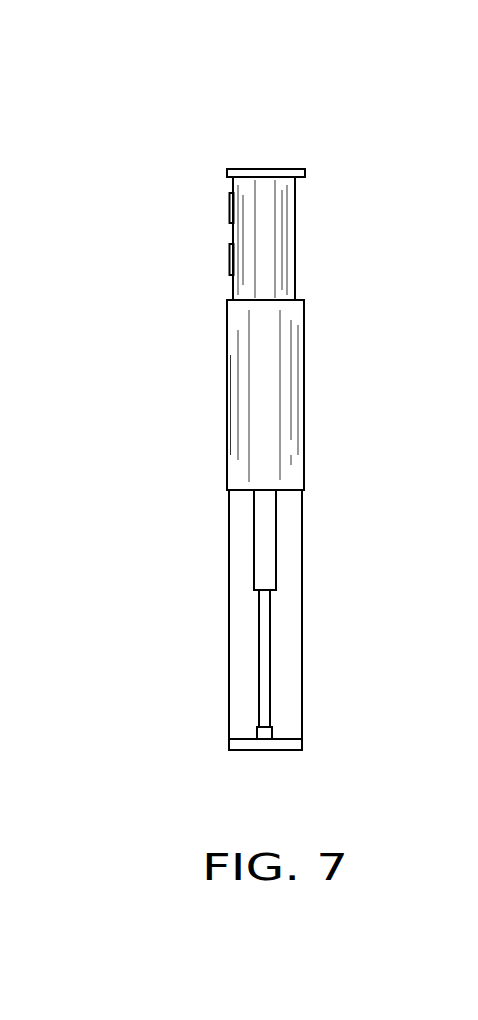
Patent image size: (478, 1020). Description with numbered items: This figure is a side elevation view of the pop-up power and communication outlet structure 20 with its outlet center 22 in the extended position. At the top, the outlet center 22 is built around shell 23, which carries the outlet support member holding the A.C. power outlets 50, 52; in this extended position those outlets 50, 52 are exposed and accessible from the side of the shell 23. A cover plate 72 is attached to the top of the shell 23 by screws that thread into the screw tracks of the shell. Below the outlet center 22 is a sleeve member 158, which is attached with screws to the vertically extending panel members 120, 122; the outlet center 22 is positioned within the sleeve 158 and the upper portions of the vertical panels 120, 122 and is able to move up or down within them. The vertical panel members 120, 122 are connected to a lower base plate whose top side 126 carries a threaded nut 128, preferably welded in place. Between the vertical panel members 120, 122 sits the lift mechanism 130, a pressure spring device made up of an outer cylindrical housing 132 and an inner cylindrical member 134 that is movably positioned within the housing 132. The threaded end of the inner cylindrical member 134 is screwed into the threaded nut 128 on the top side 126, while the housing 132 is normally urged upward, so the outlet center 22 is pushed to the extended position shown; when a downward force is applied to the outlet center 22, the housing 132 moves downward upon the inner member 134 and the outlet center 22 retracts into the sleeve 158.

The power and communication outlet structure 20 is at (185, 135).
The cover plate 72 is at (268, 169).
The outlet center 22 is at (295, 247).
The shell 23 is at (295, 207).
The outlet 50 is at (229, 205).
The outlet 52 is at (229, 257).
The sleeve member 158 is at (275, 387).
The vertical panel member 120 is at (229, 608).
The vertical panel member 122 is at (302, 623).
The outer cylindrical housing 132 is at (267, 538).
The lift mechanism 130 is at (267, 577).
The inner cylindrical member 134 is at (267, 670).
The threaded nut 128 is at (265, 731).
The top side 126 is at (286, 747).